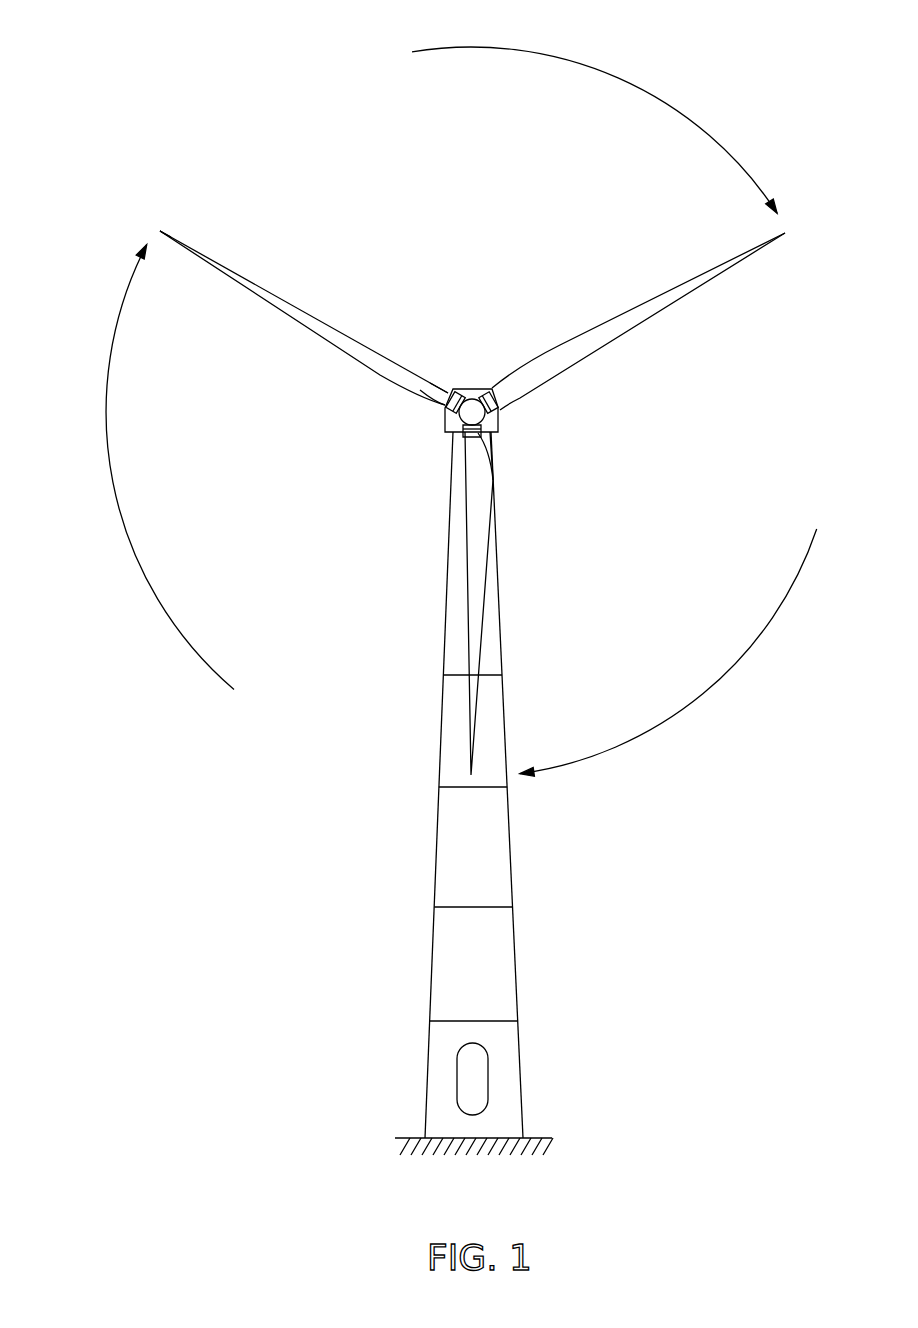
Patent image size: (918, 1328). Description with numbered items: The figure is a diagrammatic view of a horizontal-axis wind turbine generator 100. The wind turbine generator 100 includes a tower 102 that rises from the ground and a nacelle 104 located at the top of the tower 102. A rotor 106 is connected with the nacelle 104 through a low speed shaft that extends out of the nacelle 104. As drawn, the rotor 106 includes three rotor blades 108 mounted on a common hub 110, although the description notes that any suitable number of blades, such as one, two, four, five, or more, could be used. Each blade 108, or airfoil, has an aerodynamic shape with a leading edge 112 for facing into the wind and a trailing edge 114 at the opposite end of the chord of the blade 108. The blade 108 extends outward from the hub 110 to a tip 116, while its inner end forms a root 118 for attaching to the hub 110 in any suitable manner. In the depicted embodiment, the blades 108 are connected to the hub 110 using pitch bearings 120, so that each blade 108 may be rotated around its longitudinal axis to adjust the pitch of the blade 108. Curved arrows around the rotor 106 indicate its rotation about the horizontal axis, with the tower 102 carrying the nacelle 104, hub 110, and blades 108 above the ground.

The wind turbine generator 100 is at (434, 601).
The tower 102 is at (457, 858).
The nacelle 104 is at (445, 435).
The rotor 106 is at (434, 411).
The rotor blade 108 is at (418, 474).
The hub 110 is at (471, 412).
The leading edge 112 is at (263, 287).
The trailing edge 114 is at (275, 317).
The tip 116 is at (150, 223).
The root 118 is at (429, 410).
The pitch bearing 120 is at (445, 397).